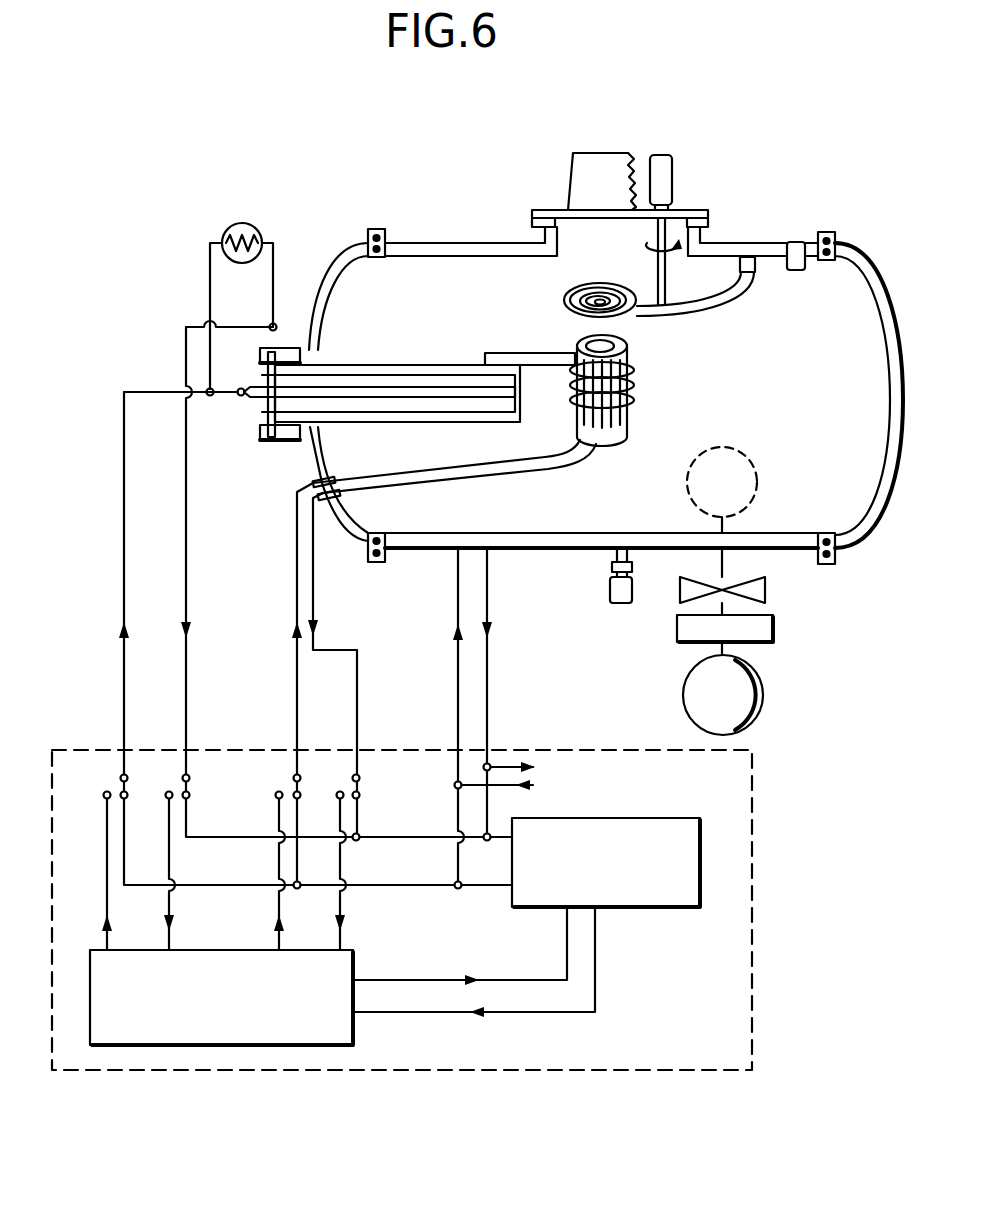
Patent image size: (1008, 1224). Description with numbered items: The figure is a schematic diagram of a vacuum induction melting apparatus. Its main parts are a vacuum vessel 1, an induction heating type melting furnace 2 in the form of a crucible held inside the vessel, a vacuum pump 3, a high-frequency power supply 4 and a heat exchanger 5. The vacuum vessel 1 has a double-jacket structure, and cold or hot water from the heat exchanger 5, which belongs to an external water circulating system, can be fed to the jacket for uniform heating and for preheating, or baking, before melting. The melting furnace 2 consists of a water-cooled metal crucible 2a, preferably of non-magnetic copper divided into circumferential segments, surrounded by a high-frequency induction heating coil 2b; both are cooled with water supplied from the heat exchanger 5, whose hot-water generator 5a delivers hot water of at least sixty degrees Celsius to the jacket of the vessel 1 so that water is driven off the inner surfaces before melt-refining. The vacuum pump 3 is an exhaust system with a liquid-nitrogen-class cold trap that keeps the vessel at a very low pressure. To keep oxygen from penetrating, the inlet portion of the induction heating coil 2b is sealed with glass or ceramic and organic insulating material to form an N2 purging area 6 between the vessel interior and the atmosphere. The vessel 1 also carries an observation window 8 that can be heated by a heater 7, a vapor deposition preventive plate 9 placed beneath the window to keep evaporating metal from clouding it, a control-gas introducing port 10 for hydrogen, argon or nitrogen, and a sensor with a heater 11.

The vacuum vessel 1 is at (873, 280).
The induction heating type melting furnace 2 is at (632, 390).
The water-cooled metal crucible 2a is at (612, 440).
The high-frequency induction heating coil 2b is at (636, 372).
The vacuum pump 3 is at (757, 722).
The high-frequency power supply 4 is at (242, 222).
The heat exchanger 5 is at (438, 910).
The hot-water generator 5a is at (662, 909).
The N2 purging area 6 is at (434, 360).
The heater 7 is at (633, 156).
The observation window 8 is at (617, 152).
The vapor deposition preventive plate 9 is at (575, 297).
The control-gas introducing port 10 is at (795, 242).
The sensor with a heater 11 is at (610, 591).